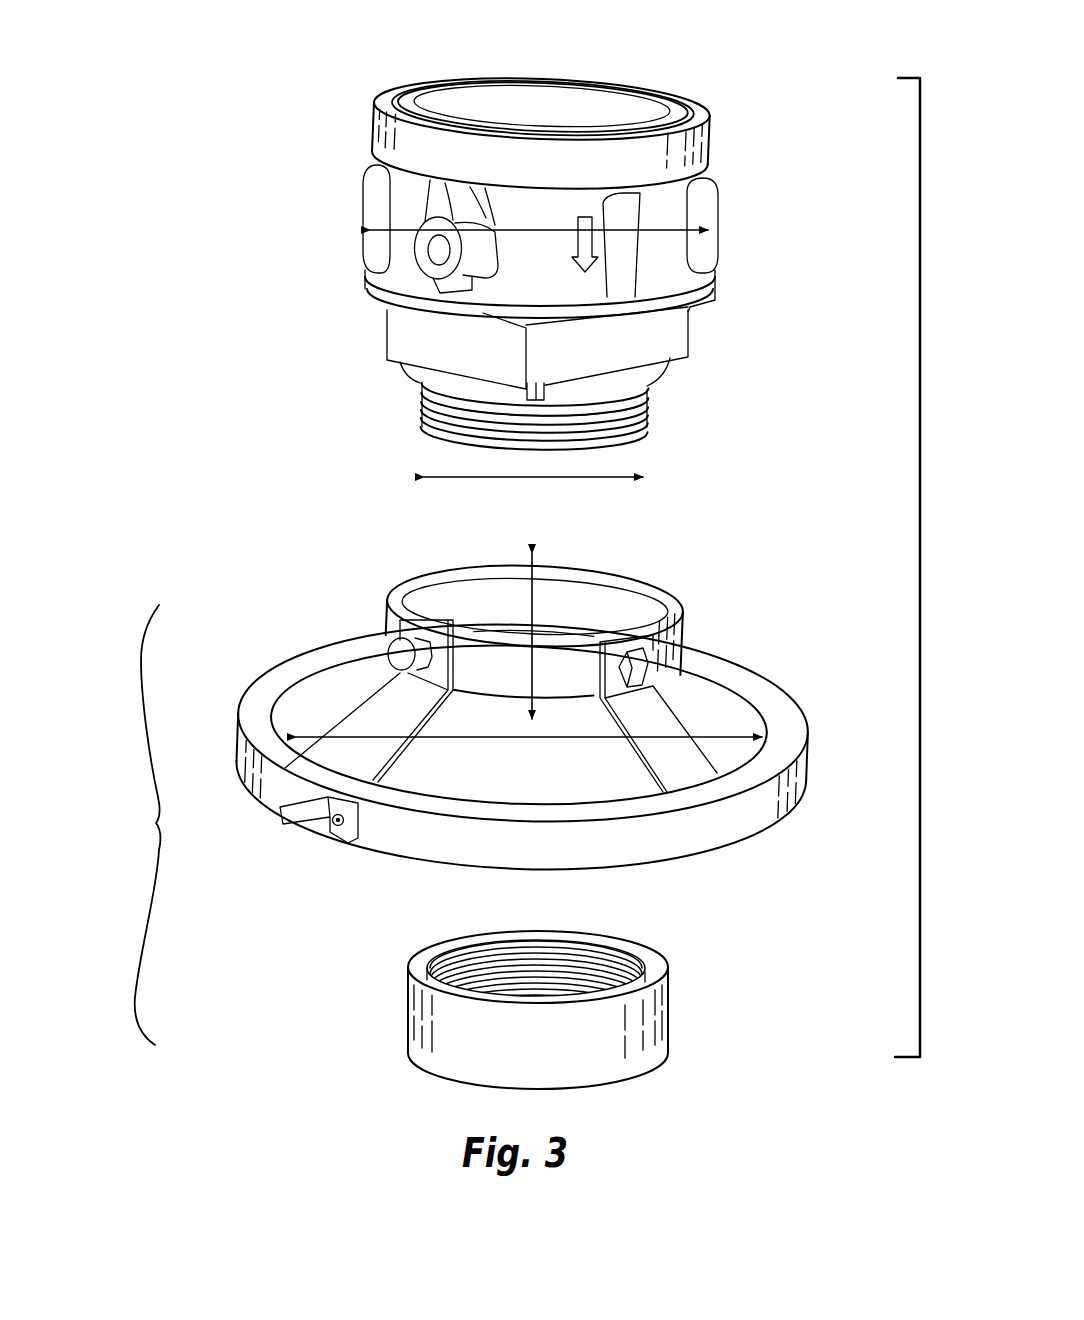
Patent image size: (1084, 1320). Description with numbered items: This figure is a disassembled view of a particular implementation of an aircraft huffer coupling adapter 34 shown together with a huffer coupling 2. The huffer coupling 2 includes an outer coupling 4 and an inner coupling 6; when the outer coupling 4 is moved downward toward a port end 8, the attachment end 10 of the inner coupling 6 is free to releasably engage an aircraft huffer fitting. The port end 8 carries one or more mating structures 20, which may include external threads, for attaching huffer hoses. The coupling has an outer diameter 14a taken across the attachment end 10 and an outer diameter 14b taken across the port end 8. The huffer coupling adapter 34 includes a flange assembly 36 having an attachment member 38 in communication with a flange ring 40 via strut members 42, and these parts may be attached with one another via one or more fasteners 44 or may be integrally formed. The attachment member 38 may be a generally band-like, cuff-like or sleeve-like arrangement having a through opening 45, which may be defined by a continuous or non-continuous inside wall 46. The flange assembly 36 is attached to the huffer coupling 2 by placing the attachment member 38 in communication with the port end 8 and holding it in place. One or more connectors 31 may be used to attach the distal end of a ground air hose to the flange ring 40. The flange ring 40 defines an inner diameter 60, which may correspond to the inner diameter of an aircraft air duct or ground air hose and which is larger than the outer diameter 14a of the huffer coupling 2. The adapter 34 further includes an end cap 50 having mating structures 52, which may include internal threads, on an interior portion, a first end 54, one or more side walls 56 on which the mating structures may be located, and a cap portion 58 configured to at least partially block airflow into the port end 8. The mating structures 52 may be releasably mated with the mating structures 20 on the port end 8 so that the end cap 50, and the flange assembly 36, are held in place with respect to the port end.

The huffer coupling 2 is at (240, 206).
The outer coupling 4 is at (700, 154).
The inner coupling 6 is at (558, 107).
The port end 8 is at (648, 411).
The attachment end 10 is at (675, 108).
The outer diameter 14a is at (657, 228).
The outer diameter 14b is at (587, 477).
The mating structures 20 is at (422, 395).
The connectors 31 is at (318, 822).
The aircraft huffer coupling adapter 34 is at (156, 823).
The flange assembly 36 is at (251, 643).
The attachment member 38 is at (672, 610).
The flange ring 40 is at (778, 755).
The strut members 42 is at (658, 737).
The fasteners 44 is at (402, 655).
The through opening 45 is at (527, 612).
The inside wall 46 is at (610, 607).
The end cap 50 is at (370, 976).
The mating structures 52 is at (500, 950).
The first end 54 is at (420, 957).
The side walls 56 is at (657, 1028).
The cap portions 58 is at (418, 1066).
The inner diameter 60 is at (570, 737).